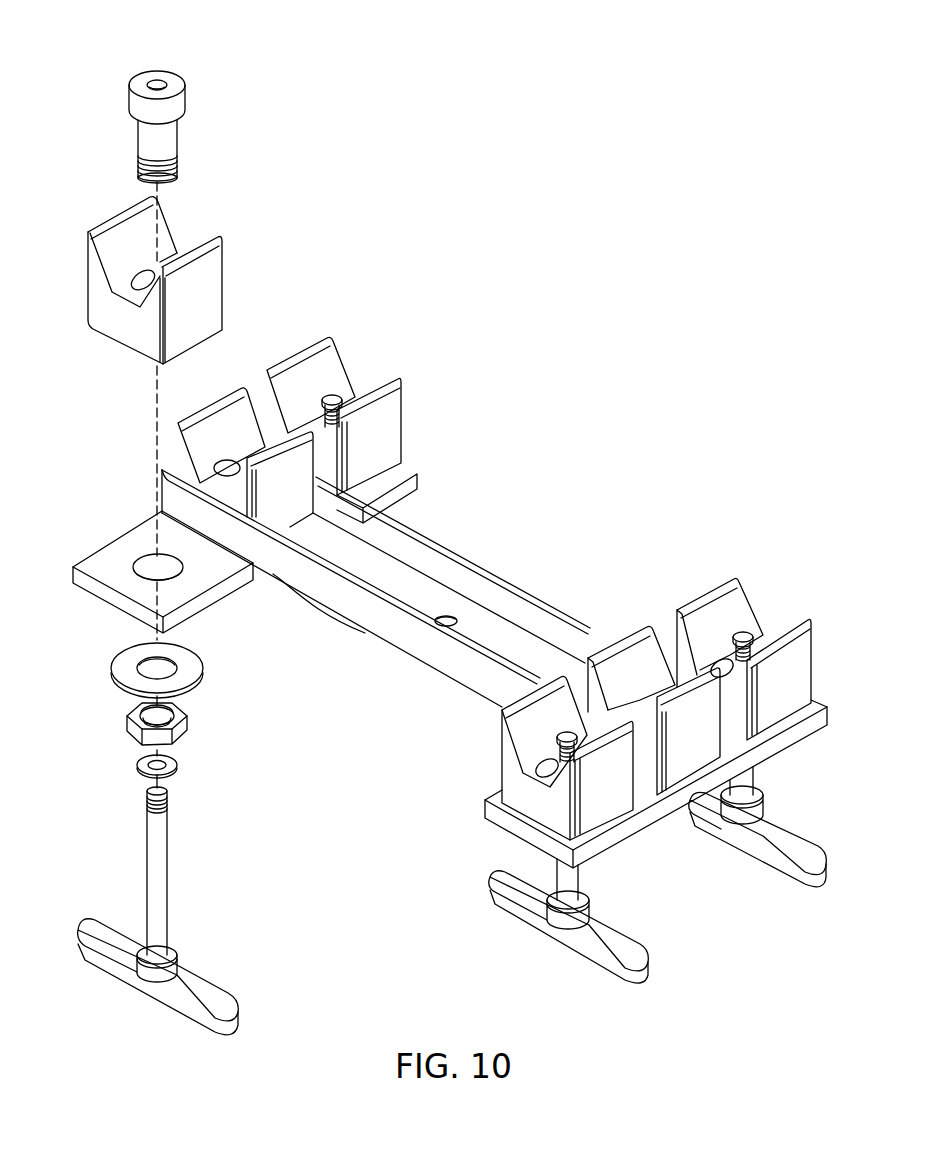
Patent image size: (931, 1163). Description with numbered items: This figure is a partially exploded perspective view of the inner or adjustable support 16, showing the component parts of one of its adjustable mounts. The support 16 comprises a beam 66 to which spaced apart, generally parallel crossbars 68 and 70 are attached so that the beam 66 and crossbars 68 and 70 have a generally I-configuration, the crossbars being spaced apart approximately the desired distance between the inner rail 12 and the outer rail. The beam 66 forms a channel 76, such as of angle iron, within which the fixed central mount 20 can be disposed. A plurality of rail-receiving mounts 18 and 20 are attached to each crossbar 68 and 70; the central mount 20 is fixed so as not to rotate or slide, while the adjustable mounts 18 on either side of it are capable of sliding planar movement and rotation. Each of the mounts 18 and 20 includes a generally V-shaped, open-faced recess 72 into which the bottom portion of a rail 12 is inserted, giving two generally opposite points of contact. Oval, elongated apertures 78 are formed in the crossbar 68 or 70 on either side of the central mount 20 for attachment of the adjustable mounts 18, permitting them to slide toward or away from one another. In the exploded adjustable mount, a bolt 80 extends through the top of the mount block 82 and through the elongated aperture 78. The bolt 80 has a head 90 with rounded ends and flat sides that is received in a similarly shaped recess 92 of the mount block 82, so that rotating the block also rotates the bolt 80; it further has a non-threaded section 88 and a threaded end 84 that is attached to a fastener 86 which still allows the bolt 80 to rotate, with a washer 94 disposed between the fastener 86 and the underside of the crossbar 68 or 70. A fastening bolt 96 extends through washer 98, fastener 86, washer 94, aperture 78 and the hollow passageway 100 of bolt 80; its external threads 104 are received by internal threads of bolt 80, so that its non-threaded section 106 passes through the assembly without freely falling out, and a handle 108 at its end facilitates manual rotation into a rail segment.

The inner rail 12 is at (692, 582).
The adjustable support 16 is at (505, 646).
The adjustable mount 18 is at (294, 352).
The central mount 20 is at (204, 400).
The beam 66 is at (390, 627).
The first crossbar 68 is at (163, 562).
The second crossbar 70 is at (632, 828).
The V-shaped recess 72 is at (335, 375).
The channel 76 is at (428, 588).
The elongated aperture 78 is at (143, 560).
The bolt 80 is at (165, 109).
The mount block 82 is at (133, 280).
The threaded end 84 is at (180, 172).
The fastener 86 is at (185, 707).
The non-threaded section 88 is at (140, 140).
The head 90 is at (155, 75).
The recess 92 is at (147, 292).
The washer 94 is at (112, 661).
The fastening bolt 96 is at (158, 911).
The washer 98 is at (140, 762).
The hollow passageway 100 is at (152, 81).
The external threads 104 is at (173, 798).
The non-threaded section 106 is at (160, 893).
The handle 108 is at (119, 974).